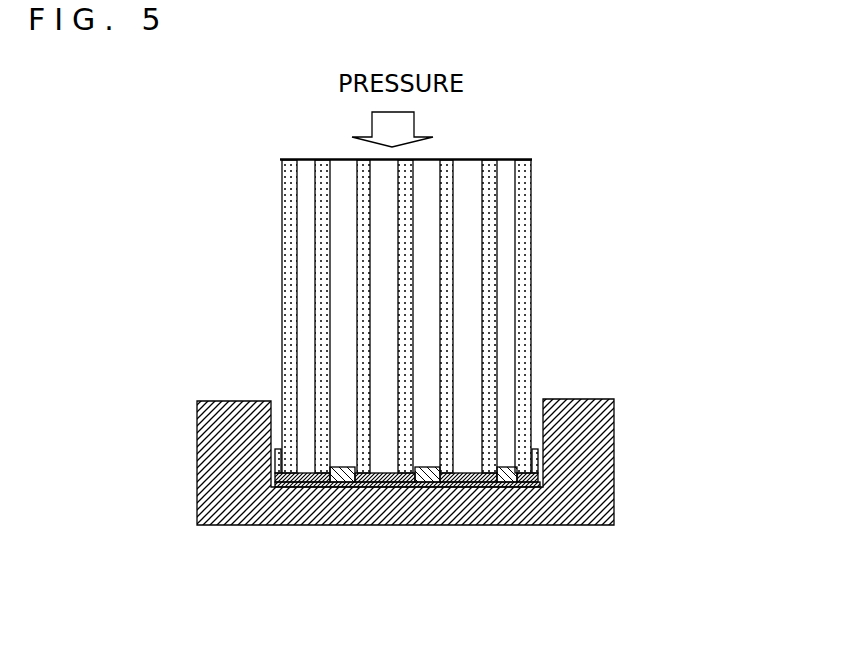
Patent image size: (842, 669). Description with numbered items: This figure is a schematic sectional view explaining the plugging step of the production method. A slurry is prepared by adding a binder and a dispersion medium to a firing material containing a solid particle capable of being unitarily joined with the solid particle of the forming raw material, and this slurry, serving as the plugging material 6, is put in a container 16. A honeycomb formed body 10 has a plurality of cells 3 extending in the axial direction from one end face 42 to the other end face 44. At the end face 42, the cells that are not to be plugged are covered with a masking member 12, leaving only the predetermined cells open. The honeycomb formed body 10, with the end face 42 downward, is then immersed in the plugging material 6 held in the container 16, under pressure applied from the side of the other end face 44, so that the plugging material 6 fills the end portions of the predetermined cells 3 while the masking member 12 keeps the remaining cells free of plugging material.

The cell 3 is at (507, 165).
The plugging material 6 is at (500, 468).
The honeycomb formed body 10 is at (424, 289).
The masking member 12 is at (308, 473).
The container 16 is at (378, 526).
The end face 42 is at (310, 487).
The other end face 44 is at (262, 169).